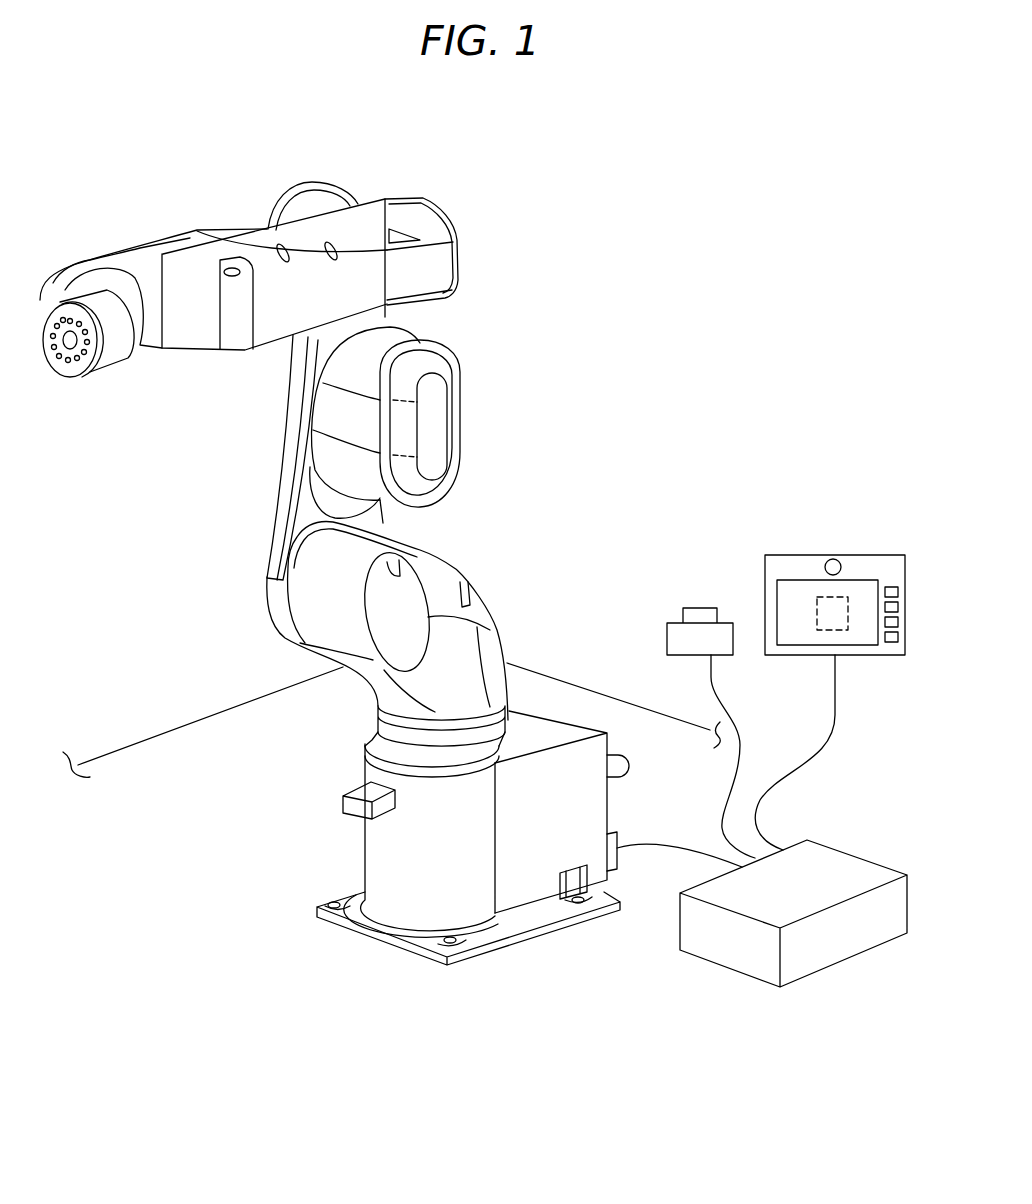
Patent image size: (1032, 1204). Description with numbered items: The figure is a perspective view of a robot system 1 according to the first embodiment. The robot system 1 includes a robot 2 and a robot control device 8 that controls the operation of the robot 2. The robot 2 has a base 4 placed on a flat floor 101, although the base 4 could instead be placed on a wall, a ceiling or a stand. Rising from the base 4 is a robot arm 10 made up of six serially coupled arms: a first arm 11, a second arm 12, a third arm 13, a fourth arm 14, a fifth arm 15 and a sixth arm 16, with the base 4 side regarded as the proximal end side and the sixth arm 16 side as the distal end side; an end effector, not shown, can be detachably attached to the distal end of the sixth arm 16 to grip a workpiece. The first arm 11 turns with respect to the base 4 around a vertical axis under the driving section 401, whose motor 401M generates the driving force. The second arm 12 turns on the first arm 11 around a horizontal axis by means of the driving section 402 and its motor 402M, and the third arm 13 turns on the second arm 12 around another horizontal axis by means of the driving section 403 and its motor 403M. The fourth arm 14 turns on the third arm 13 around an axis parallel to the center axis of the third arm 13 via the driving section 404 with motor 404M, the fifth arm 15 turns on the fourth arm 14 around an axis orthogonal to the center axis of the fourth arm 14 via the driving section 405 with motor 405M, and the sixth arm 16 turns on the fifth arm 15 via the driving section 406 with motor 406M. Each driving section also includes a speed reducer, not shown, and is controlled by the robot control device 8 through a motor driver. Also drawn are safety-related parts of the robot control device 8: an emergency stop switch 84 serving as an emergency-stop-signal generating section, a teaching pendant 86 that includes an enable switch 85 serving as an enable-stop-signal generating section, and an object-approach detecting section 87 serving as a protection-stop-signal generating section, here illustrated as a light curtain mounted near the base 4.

The robot system 1 is at (521, 146).
The robot 2 is at (501, 208).
The robot arm 10 is at (501, 250).
The base 4 is at (611, 808).
The robot control device 8 is at (856, 858).
The first arm 11 is at (489, 597).
The second arm 12 is at (272, 490).
The third arm 13 is at (441, 204).
The fourth arm 14 is at (221, 227).
The fifth arm 15 is at (115, 375).
The sixth arm 16 is at (70, 381).
The emergency stop switch 84 is at (699, 607).
The enable switch 85 is at (841, 597).
The teaching pendant 86 is at (814, 555).
The object-approach detecting section 87 is at (343, 806).
The floor 101 is at (187, 743).
The motor 401M is at (441, 637).
The driving section 401 is at (387, 634).
The motor 402M is at (448, 440).
The driving section 402 is at (432, 426).
The motor 403M is at (462, 383).
The driving section 403 is at (385, 425).
The motor 404M is at (427, 268).
The driving section 404 is at (421, 257).
The motor 405M is at (252, 358).
The driving section 405 is at (236, 303).
The motor 406M is at (259, 295).
The driving section 406 is at (313, 206).